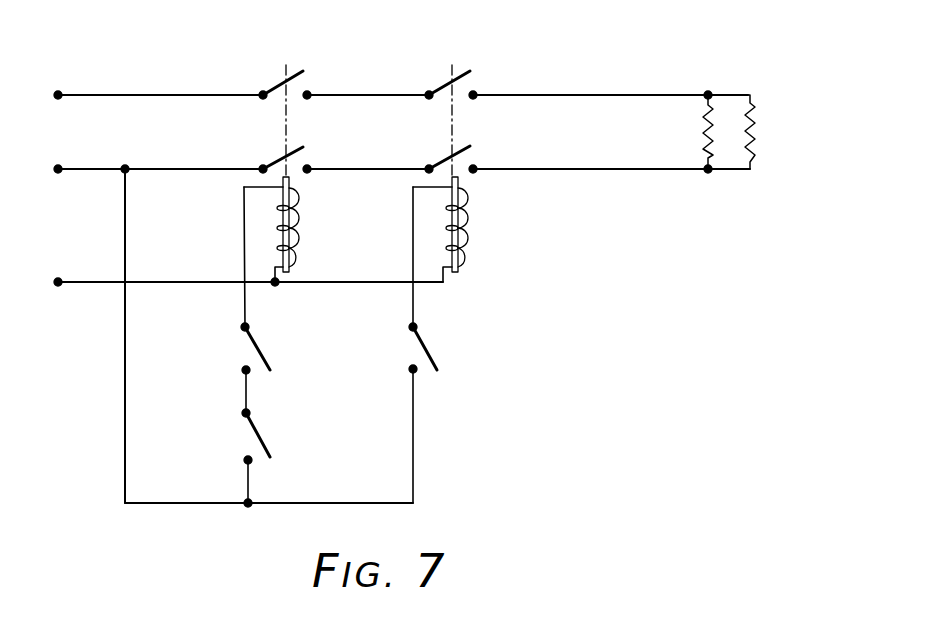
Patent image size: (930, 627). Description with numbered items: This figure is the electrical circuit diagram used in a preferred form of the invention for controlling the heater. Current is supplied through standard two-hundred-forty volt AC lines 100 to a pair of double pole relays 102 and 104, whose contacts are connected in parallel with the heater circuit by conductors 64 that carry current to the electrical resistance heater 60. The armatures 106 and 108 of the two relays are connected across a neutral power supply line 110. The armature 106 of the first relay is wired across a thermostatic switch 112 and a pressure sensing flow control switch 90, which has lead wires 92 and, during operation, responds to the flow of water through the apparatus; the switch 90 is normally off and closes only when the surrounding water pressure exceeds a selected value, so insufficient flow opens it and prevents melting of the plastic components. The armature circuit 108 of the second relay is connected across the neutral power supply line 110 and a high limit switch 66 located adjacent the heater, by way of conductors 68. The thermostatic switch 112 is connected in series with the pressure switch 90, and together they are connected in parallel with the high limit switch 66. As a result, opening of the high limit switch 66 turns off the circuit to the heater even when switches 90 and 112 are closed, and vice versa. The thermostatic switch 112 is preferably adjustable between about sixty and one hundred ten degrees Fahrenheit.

The electrical resistance heater 60 is at (748, 130).
The conductors 64 is at (637, 96).
The high limit switch 66 is at (428, 350).
The conductors 68 is at (415, 303).
The pressure sensing flow control switch 90 is at (253, 432).
The lead wires 92 is at (245, 301).
The 240 volt AC lines 100 is at (80, 97).
The double pole relay 102 is at (272, 98).
The double pole relay 104 is at (436, 97).
The relay armature 106 is at (298, 222).
The relay armature circuit 108 is at (466, 222).
The neutral power supply line 110 is at (210, 281).
The thermostatic switch 112 is at (252, 345).